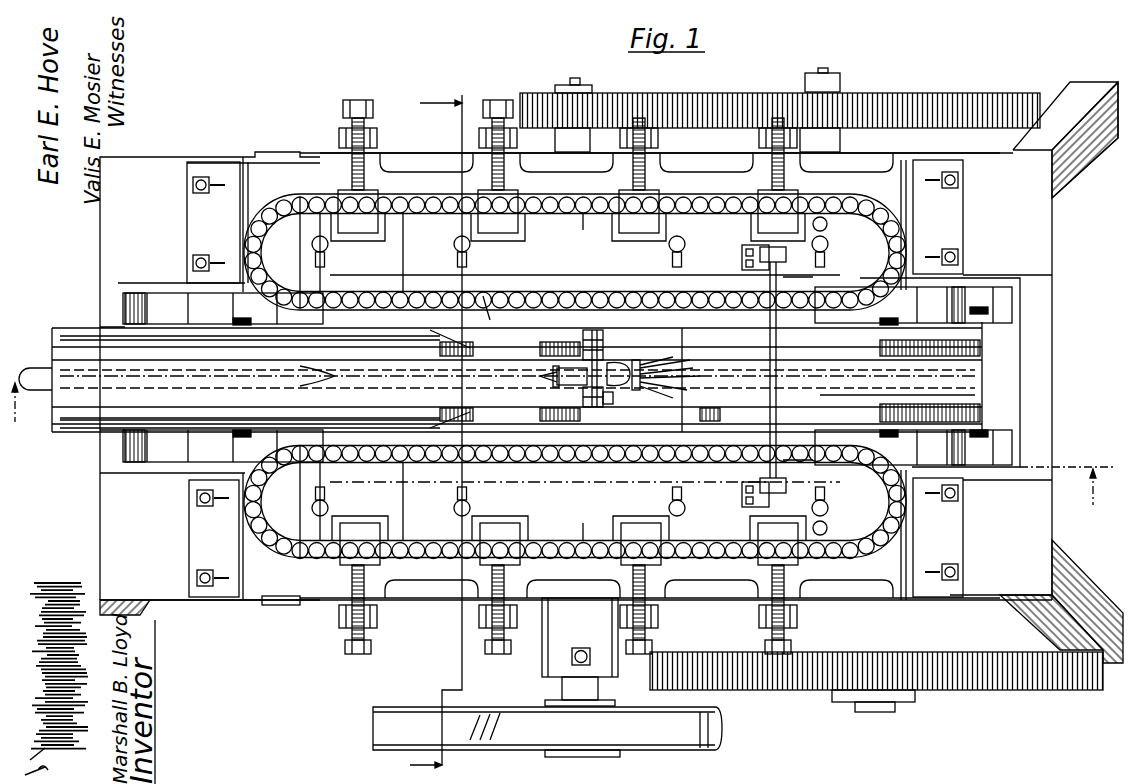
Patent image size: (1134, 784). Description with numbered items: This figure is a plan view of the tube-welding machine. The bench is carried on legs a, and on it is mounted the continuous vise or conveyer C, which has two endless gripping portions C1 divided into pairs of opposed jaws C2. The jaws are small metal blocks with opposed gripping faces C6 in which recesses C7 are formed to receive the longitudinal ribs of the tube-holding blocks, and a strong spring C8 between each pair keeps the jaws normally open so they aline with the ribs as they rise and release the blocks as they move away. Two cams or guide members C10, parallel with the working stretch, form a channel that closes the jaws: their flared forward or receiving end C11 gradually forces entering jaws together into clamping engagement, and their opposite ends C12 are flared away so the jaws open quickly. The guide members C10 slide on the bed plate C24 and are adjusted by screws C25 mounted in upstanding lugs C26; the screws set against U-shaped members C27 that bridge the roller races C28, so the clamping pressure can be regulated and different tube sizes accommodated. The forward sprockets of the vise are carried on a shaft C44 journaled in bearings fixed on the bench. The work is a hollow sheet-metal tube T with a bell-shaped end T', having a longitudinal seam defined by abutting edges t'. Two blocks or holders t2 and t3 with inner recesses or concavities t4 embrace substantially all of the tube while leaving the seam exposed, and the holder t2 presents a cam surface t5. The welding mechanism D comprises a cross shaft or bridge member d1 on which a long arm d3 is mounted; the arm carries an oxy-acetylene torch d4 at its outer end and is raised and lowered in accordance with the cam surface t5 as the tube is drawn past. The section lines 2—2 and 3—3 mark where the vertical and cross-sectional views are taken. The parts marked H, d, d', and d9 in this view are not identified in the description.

The legs a is at (133, 155).
The frame base H is at (182, 601).
The continuous vise or conveyer C is at (566, 284).
The endless gripping portions C1 is at (628, 313).
The opposed jaws C2 is at (190, 300).
The opposed gripping faces C6 is at (403, 290).
The recesses C7 is at (147, 300).
The spring C8 is at (240, 434).
The cams or guide members C10 is at (390, 263).
The forward or receiving end C11 is at (312, 248).
The opposite ends C12 is at (813, 277).
The bed plate C24 is at (585, 170).
The screws C25 is at (343, 110).
The upstanding lugs C26 is at (378, 133).
The U-shaped members C27 is at (503, 228).
The roller races C28 is at (583, 215).
The shaft C44 is at (266, 607).
The hollow article T is at (530, 377).
The bell-shaped end T' is at (260, 328).
The edges t' is at (330, 388).
The block or holder t2 is at (77, 342).
The block or holder t3 is at (72, 407).
The inner recesses or concavities t4 is at (93, 427).
The cam surface t5 is at (907, 412).
The welding mechanism D is at (620, 362).
The bracket d is at (737, 375).
The cross shaft or bridge member d1 is at (760, 281).
The long arm d3 is at (682, 343).
The oxy-acetylene torch d4 is at (550, 380).
The feed tubes d' is at (662, 382).
The clamp d9 is at (608, 405).
The section line 2— 2 is at (563, 450).
The section line 3— 3 is at (436, 428).